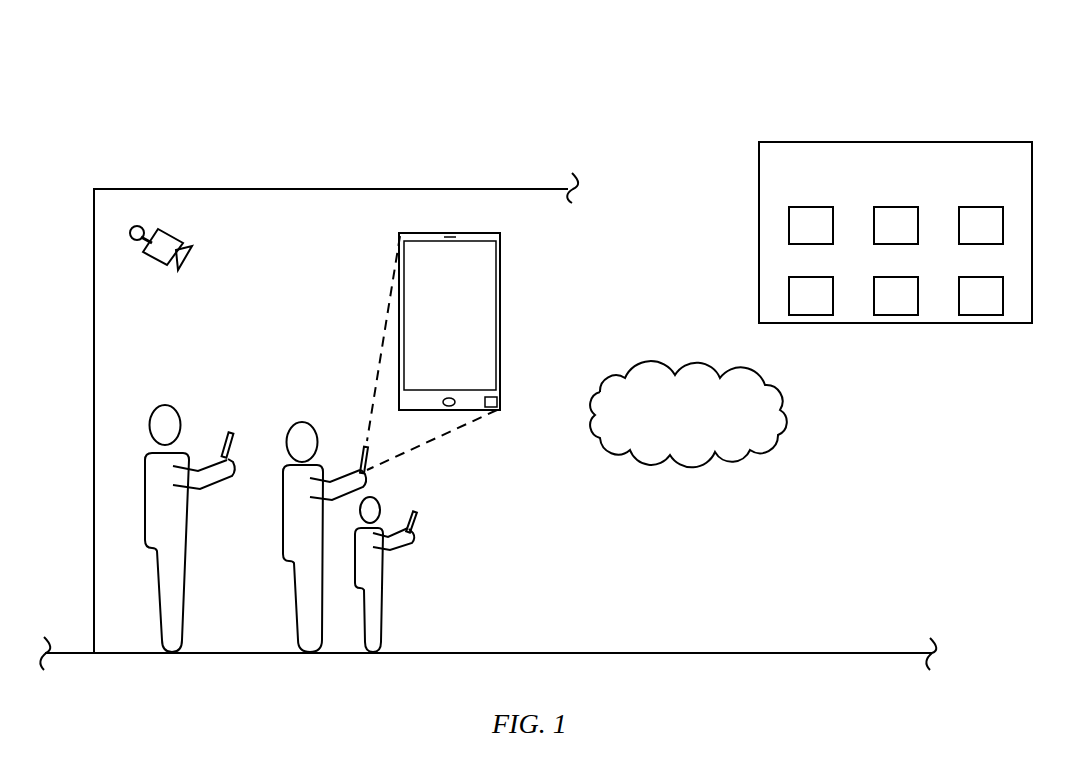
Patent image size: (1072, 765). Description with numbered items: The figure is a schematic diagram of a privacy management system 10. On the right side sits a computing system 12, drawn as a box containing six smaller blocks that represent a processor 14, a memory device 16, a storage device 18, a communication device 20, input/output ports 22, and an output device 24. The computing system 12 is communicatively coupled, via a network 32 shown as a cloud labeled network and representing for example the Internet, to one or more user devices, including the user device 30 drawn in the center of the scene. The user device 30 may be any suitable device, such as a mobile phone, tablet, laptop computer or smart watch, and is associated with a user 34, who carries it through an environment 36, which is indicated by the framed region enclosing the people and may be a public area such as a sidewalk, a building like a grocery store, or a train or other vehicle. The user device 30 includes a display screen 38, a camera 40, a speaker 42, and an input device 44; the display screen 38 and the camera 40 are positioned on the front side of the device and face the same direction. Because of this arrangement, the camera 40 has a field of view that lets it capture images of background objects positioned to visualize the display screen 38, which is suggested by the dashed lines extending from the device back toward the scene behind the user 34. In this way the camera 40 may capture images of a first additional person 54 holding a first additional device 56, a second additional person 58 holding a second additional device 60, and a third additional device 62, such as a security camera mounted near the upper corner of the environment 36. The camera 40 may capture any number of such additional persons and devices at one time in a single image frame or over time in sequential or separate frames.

The privacy management system 10 is at (957, 70).
The computing system 12 is at (898, 142).
The processor 14 is at (812, 207).
The memory device 16 is at (897, 207).
The storage device 18 is at (982, 207).
The communication device 20 is at (812, 277).
The input/output (I/O) ports 22 is at (897, 277).
The output device 24 is at (982, 277).
The user device 30 is at (502, 272).
The network 32 is at (700, 373).
The user 34 is at (303, 422).
The environment 36 is at (582, 245).
The display screen 38 is at (492, 323).
The camera 40 is at (450, 238).
The speaker 42 is at (497, 398).
The input device 44 is at (452, 407).
The first additional person 54 is at (167, 403).
The first additional device 56 is at (230, 440).
The second additional person 58 is at (378, 500).
The second additional device 60 is at (415, 512).
The third additional device 62 is at (173, 232).